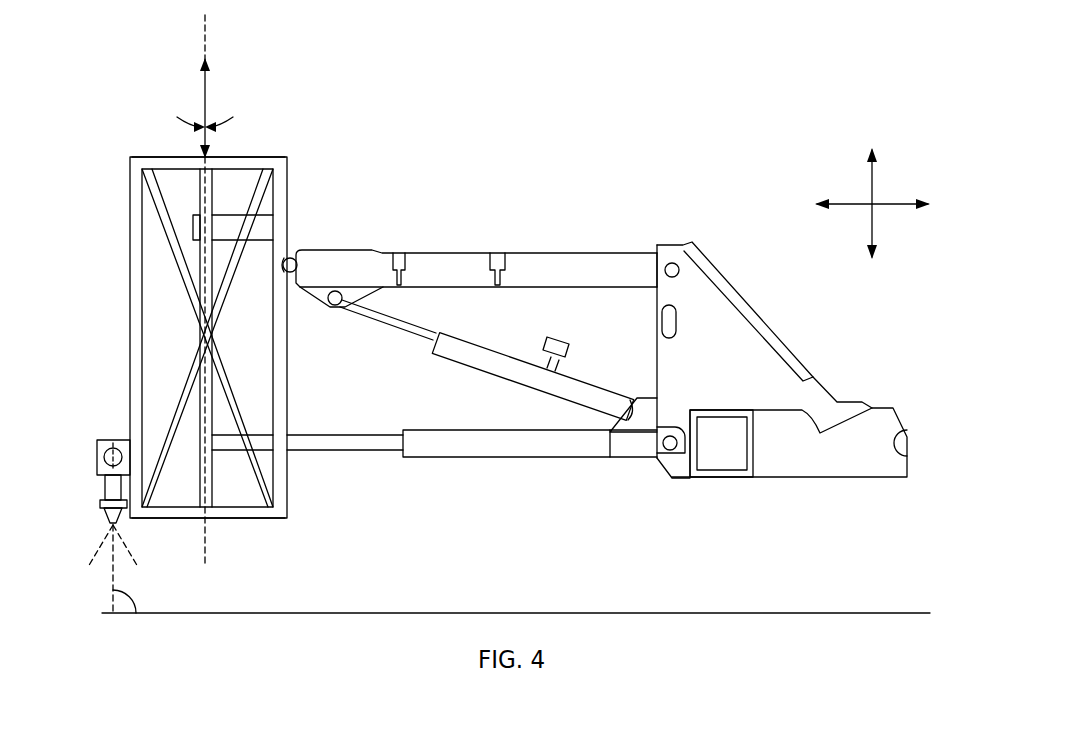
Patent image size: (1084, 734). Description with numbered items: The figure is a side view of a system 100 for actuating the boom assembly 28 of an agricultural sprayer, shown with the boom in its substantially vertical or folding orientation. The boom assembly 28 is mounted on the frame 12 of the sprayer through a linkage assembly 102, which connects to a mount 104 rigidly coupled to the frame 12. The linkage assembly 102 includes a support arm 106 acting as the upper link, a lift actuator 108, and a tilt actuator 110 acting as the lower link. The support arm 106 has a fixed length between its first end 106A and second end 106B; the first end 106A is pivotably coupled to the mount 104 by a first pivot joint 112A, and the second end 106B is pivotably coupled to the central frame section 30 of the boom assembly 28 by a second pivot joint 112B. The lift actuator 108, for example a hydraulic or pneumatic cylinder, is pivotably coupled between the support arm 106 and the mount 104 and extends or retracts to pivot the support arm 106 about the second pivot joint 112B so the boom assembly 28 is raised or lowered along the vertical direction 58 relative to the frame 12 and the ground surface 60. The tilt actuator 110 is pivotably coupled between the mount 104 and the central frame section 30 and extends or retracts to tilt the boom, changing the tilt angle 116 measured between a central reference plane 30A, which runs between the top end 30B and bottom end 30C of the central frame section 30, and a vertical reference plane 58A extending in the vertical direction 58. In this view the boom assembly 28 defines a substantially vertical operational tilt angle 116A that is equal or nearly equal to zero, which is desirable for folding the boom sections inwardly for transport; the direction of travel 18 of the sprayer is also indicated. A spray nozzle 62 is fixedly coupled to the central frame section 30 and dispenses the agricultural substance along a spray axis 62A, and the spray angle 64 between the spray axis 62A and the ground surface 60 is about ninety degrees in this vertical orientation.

The frame 12 is at (813, 460).
The direction of travel 18 is at (878, 200).
The boom assembly 28 is at (204, 306).
The central frame section 30 is at (132, 327).
The central reference plane 30A is at (205, 541).
The top end 30B is at (155, 156).
The bottom end 30C is at (258, 519).
The vertical direction 58 is at (870, 228).
The vertical reference plane 58A is at (207, 96).
The ground surface 60 is at (817, 612).
The spray nozzle 62 is at (90, 438).
The spray axis 62A is at (113, 578).
The spray angle 64 is at (133, 602).
The system 100 is at (713, 138).
The linkage assembly 102 is at (597, 226).
The mount 104 is at (720, 310).
The support arm 106 is at (470, 254).
The first end 106A is at (316, 254).
The second end 106B is at (657, 291).
The lift actuator 108 is at (459, 358).
The tilt actuator 110 is at (469, 452).
The first pivot joint 112A is at (297, 247).
The second pivot joint 112B is at (670, 263).
The tilt angle 116 is at (224, 130).
The substantially vertical operational tilt angle 116A is at (277, 134).